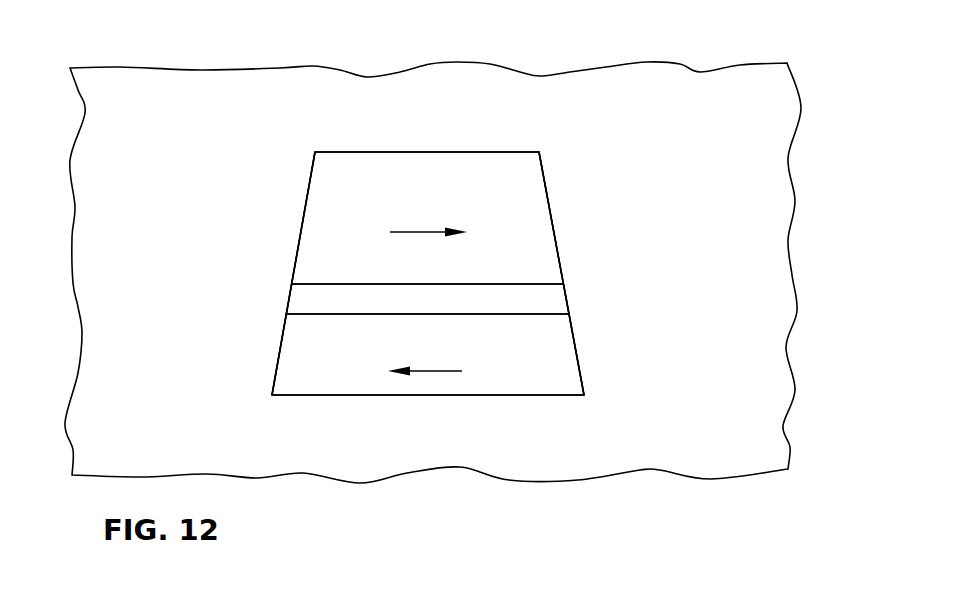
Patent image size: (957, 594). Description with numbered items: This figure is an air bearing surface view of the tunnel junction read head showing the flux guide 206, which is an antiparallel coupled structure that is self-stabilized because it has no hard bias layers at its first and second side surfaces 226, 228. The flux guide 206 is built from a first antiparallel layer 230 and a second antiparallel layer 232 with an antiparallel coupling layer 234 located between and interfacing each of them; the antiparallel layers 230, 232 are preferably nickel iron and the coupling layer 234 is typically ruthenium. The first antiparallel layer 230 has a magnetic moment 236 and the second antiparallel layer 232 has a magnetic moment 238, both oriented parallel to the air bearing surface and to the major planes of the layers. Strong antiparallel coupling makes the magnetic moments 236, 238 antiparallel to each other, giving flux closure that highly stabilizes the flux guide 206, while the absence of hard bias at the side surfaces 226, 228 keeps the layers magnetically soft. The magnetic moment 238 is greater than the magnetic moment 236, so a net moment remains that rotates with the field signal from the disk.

The flux guide 206 is at (381, 146).
The first side surface 226 is at (296, 210).
The second side surface 228 is at (560, 206).
The first antiparallel layer 230 is at (563, 346).
The second antiparallel layer 232 is at (532, 170).
The antiparallel coupling layer 234 is at (297, 298).
The magnetic moment 236 is at (448, 370).
The magnetic moment 238 is at (403, 231).